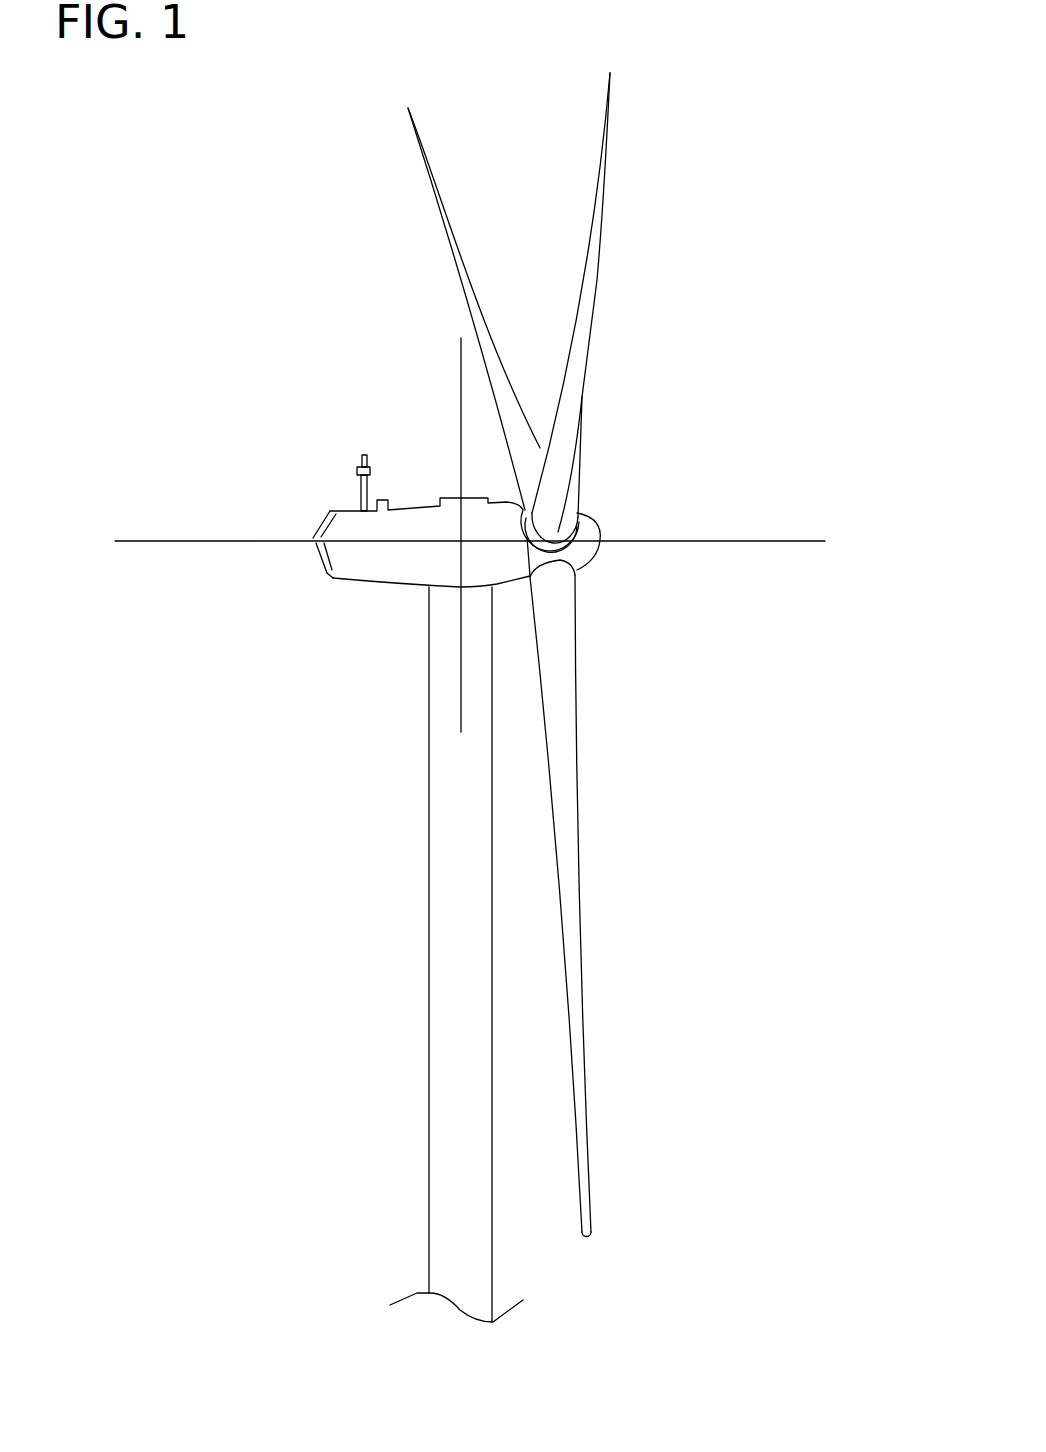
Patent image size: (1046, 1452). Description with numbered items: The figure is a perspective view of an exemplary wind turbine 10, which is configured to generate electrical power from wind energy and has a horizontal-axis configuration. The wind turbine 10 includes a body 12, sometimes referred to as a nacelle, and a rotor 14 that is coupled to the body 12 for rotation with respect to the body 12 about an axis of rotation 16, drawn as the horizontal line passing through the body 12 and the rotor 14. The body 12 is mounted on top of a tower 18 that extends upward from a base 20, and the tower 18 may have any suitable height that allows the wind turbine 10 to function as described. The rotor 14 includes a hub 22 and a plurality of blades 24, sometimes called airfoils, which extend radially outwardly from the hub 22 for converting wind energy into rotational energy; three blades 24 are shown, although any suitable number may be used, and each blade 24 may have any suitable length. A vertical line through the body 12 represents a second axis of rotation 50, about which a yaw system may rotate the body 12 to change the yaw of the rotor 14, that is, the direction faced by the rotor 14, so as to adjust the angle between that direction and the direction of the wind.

The wind turbine 10 is at (253, 137).
The body 12 is at (368, 583).
The rotor 14 is at (557, 655).
The axis of rotation 16 is at (713, 540).
The tower 18 is at (429, 873).
The base 20 is at (384, 1316).
The hub 22 is at (598, 547).
The blades 24 is at (442, 178).
The axis of rotation 50 is at (460, 355).